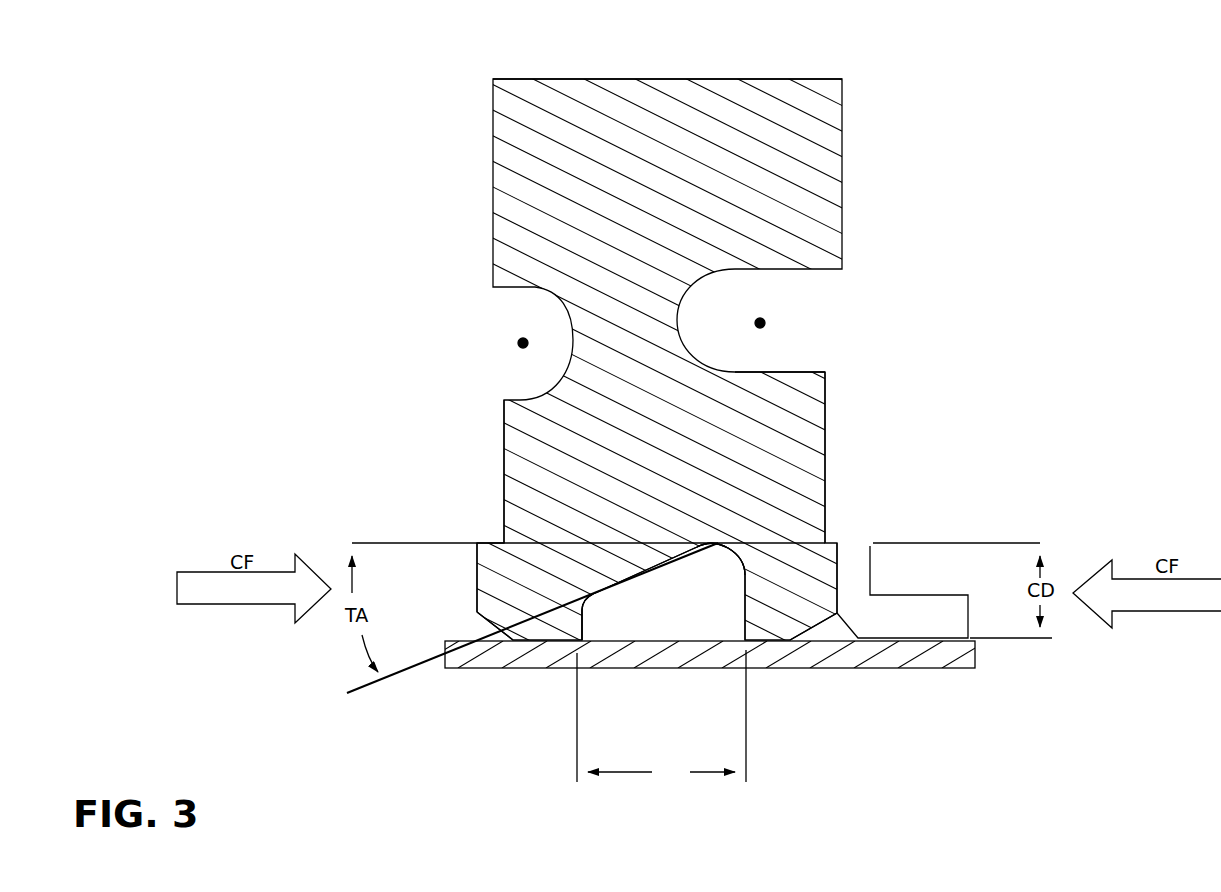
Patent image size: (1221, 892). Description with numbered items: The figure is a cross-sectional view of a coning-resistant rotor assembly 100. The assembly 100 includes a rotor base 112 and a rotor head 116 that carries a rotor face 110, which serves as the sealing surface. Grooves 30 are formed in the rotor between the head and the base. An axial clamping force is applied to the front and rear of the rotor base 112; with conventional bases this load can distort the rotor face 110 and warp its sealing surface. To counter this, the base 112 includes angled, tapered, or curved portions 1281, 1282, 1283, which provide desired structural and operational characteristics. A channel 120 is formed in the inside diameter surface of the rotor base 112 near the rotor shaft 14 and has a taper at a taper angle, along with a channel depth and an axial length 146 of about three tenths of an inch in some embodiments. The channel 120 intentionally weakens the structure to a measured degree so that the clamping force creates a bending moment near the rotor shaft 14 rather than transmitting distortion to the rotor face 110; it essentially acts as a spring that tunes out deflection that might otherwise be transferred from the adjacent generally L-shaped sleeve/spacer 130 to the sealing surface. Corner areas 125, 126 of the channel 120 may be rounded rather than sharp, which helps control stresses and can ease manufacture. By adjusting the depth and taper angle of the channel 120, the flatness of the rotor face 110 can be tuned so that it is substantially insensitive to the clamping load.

The coning-resistant rotor assembly 100 is at (914, 240).
The rotor face 110 is at (481, 180).
The rotor base 112 is at (837, 455).
The rotor head 116 is at (719, 79).
The groove 30 is at (523, 343).
The angled, tapered, or curved portion 1281 is at (492, 543).
The angled, tapered, or curved portion 1282 is at (487, 618).
The angled, tapered, or curved portion 1283 is at (822, 628).
The channel 120 is at (670, 606).
The corner area of channel 125 is at (718, 558).
The corner area of channel 126 is at (592, 608).
The L-shaped sleeve/spacer 130 is at (878, 612).
The rotor shaft 14 is at (955, 670).
The axial length of channel 146 is at (661, 717).